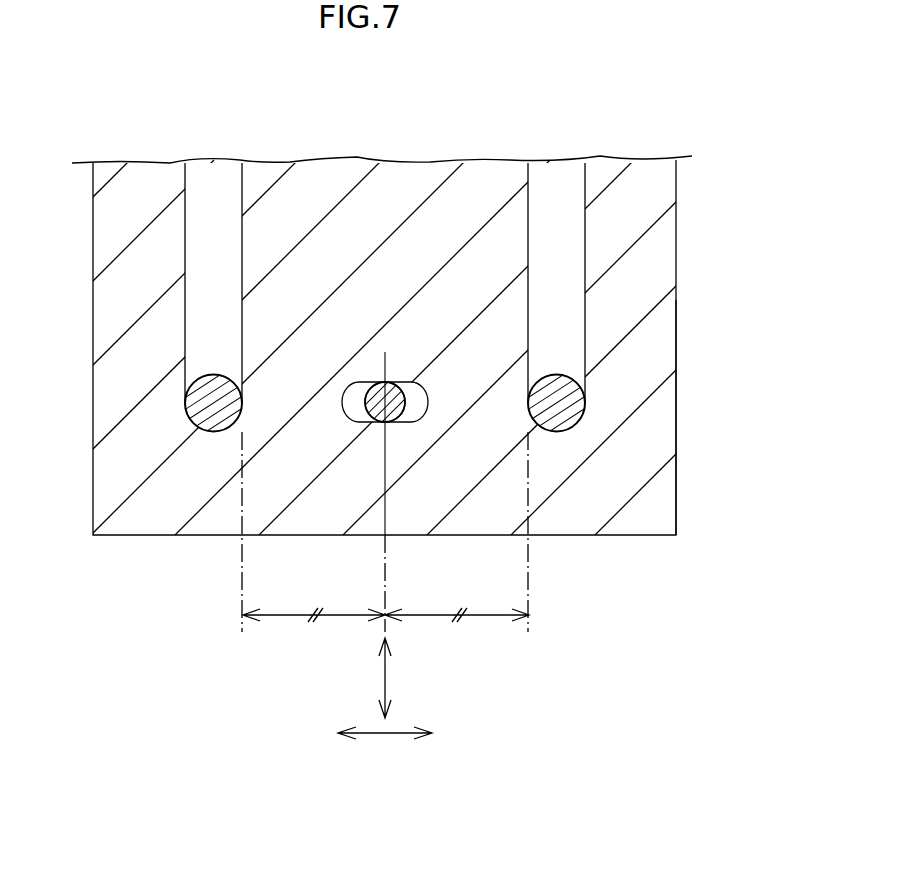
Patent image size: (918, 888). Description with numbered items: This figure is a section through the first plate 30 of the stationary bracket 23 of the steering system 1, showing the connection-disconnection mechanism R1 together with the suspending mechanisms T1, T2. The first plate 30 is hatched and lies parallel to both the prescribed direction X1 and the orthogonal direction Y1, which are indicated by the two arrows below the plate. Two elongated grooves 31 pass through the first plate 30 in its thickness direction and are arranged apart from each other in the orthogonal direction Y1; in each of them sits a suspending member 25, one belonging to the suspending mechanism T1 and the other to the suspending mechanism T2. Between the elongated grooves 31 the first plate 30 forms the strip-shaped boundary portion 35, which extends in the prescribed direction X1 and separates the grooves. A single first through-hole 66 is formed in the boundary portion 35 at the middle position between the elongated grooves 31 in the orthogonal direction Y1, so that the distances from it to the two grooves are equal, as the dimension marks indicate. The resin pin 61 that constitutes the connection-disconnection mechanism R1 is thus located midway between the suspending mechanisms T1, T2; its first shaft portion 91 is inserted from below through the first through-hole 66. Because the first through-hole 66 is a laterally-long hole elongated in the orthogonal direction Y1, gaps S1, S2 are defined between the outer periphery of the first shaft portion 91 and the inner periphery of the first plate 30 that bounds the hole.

The steering system 1 is at (666, 137).
The stationary bracket 23 is at (690, 318).
The suspending member 25 is at (200, 402).
The first plate 30 is at (662, 250).
The elongated grooves 31 is at (213, 165).
The boundary portion 35 is at (397, 180).
The pin 61 is at (367, 372).
The first through-hole 66 is at (420, 422).
The first shaft portion 91 is at (365, 495).
The gap S1 is at (345, 388).
The gap S2 is at (427, 388).
The suspending mechanism T1 is at (166, 405).
The suspending mechanism T2 is at (606, 417).
The connection-disconnection mechanism R1 is at (397, 451).
The prescribed direction X1 is at (386, 678).
The orthogonal direction Y1 is at (386, 735).